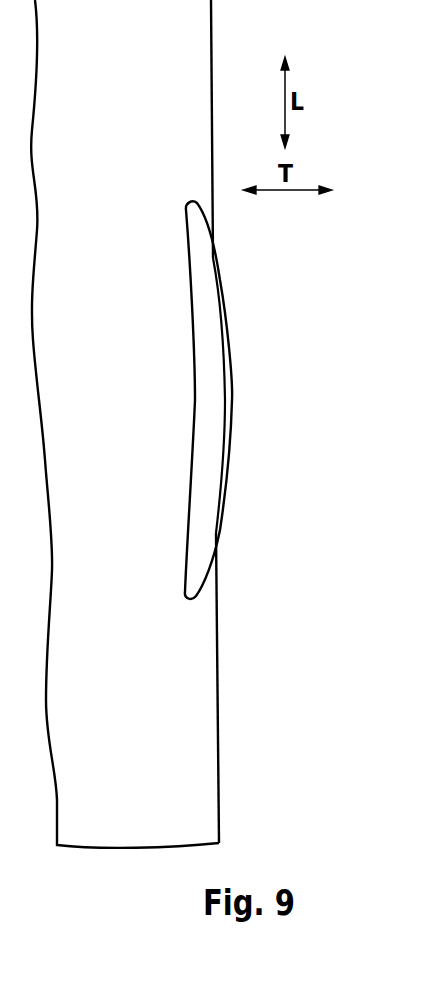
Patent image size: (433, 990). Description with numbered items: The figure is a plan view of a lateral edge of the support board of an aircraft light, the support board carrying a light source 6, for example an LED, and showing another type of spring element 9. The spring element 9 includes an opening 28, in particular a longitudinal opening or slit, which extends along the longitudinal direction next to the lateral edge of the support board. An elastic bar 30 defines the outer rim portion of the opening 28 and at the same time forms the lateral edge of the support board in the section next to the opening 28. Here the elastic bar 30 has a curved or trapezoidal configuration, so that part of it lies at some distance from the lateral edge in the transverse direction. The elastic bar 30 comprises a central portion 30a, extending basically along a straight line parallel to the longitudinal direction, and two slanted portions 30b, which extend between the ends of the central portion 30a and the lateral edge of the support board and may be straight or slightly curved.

The light source 6 is at (193, 53).
The spring element 9 is at (244, 400).
The opening 28 is at (207, 488).
The elastic bar 30 is at (244, 400).
The central portion 30a is at (230, 392).
The slanted portions 30b is at (215, 258).